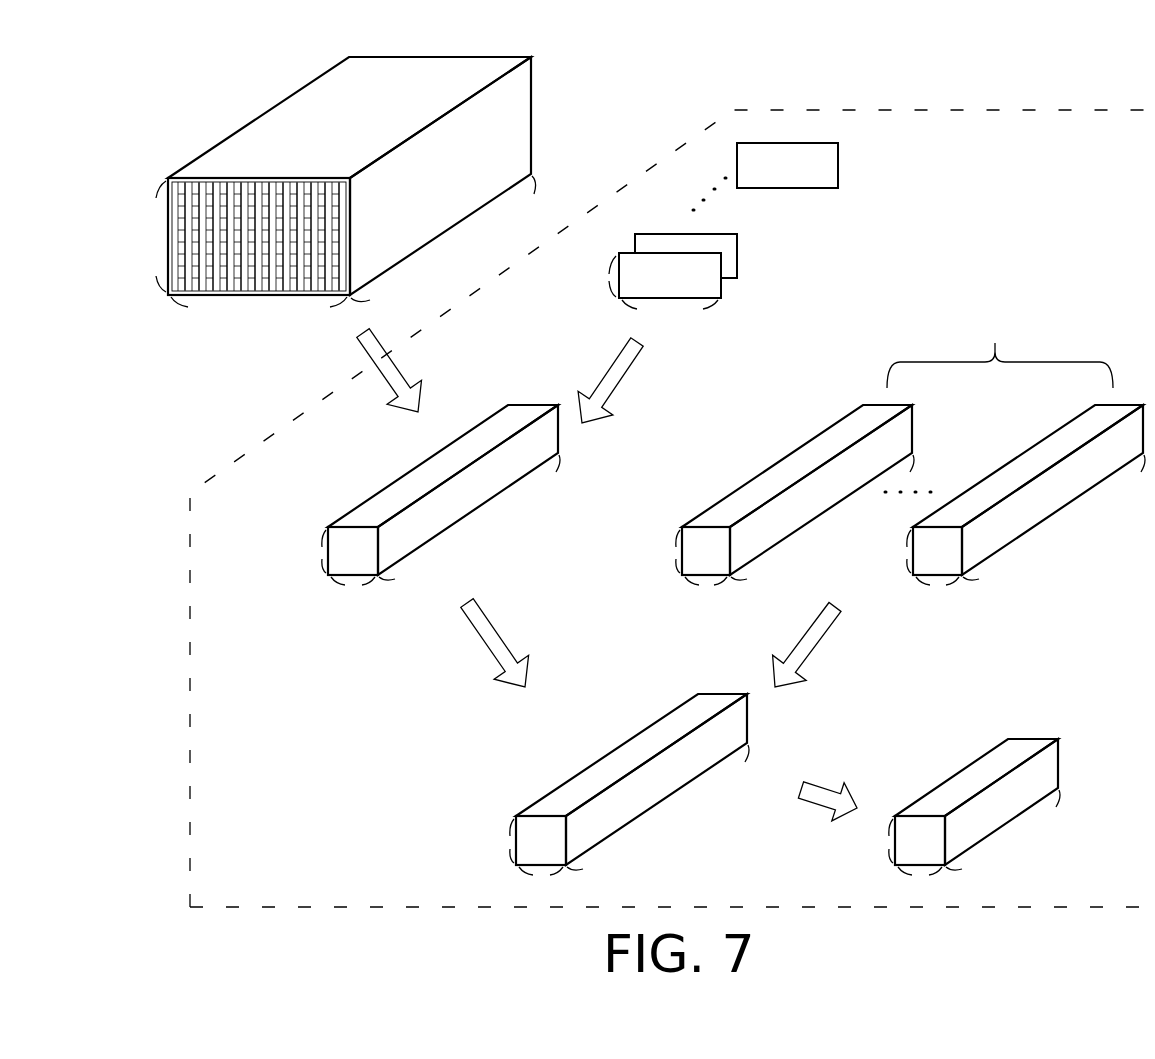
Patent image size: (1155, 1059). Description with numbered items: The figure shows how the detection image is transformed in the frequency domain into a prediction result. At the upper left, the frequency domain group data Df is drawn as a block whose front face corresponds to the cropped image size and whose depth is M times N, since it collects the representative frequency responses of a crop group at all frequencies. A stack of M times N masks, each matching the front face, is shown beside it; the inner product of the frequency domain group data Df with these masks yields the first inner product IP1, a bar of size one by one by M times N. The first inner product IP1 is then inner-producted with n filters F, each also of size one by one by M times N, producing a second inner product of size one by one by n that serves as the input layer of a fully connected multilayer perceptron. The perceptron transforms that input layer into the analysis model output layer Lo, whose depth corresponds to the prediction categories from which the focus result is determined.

The frequency domain group data Df is at (233, 98).
The first inner product IP1 is at (378, 466).
The filter F is at (799, 440).
The analysis model output layer Lo is at (969, 740).